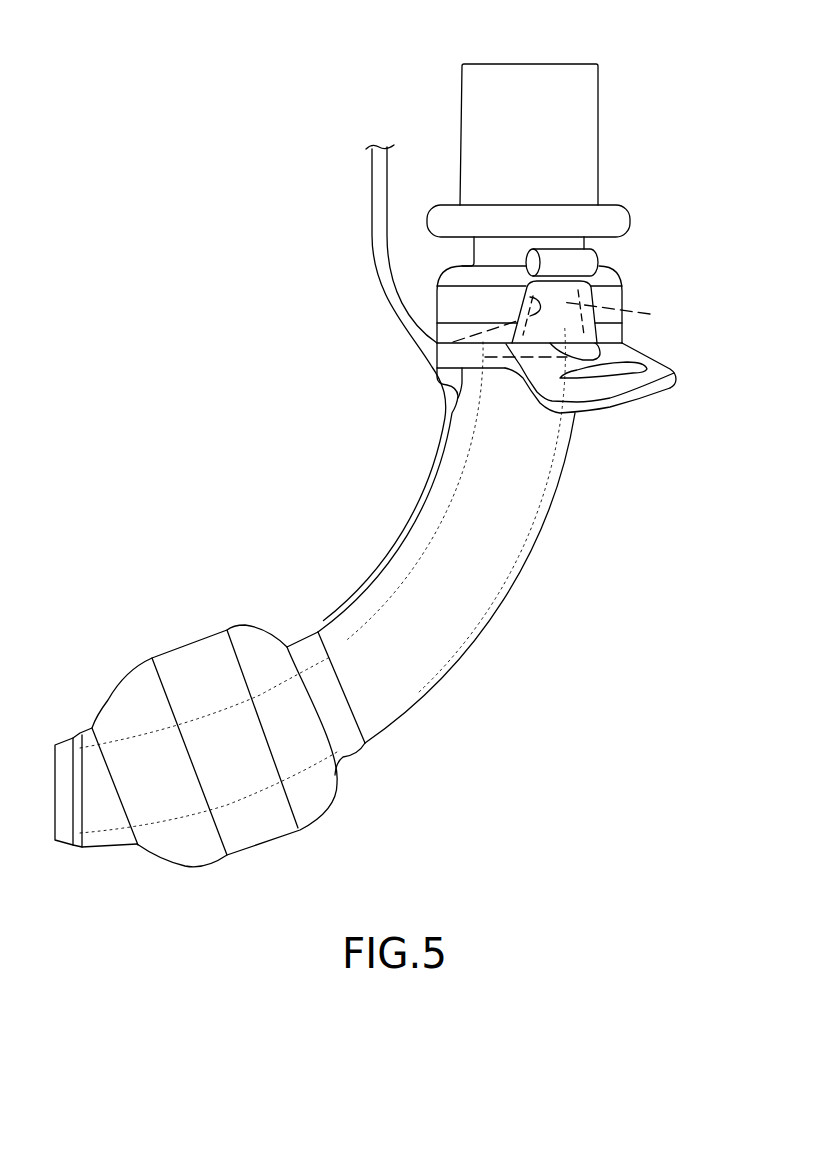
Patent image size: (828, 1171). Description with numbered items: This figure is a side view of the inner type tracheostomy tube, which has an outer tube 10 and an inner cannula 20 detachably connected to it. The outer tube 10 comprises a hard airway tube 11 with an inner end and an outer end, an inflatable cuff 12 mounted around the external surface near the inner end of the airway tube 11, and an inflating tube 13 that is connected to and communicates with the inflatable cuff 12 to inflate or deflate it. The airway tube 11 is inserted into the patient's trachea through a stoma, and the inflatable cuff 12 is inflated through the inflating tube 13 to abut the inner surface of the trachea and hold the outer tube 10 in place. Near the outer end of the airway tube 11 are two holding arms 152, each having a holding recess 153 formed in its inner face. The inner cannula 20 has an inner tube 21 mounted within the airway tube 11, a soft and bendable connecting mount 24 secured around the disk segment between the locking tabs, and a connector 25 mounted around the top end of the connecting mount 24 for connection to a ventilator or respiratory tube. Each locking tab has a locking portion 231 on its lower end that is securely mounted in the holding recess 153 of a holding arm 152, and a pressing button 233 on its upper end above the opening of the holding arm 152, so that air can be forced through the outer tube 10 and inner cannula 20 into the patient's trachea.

The outer tube 10 is at (343, 506).
The airway tube 11 is at (565, 478).
The inflatable cuff 12 is at (318, 798).
The inflating tube 13 is at (382, 278).
The inner cannula 20 is at (538, 225).
The inner tube 21 is at (518, 553).
The connecting mount 24 is at (442, 302).
The connector 25 is at (583, 112).
The holding arm 152 is at (587, 295).
The holding recess 153 is at (433, 347).
The locking portion 231 is at (630, 315).
The pressing button 233 is at (583, 258).